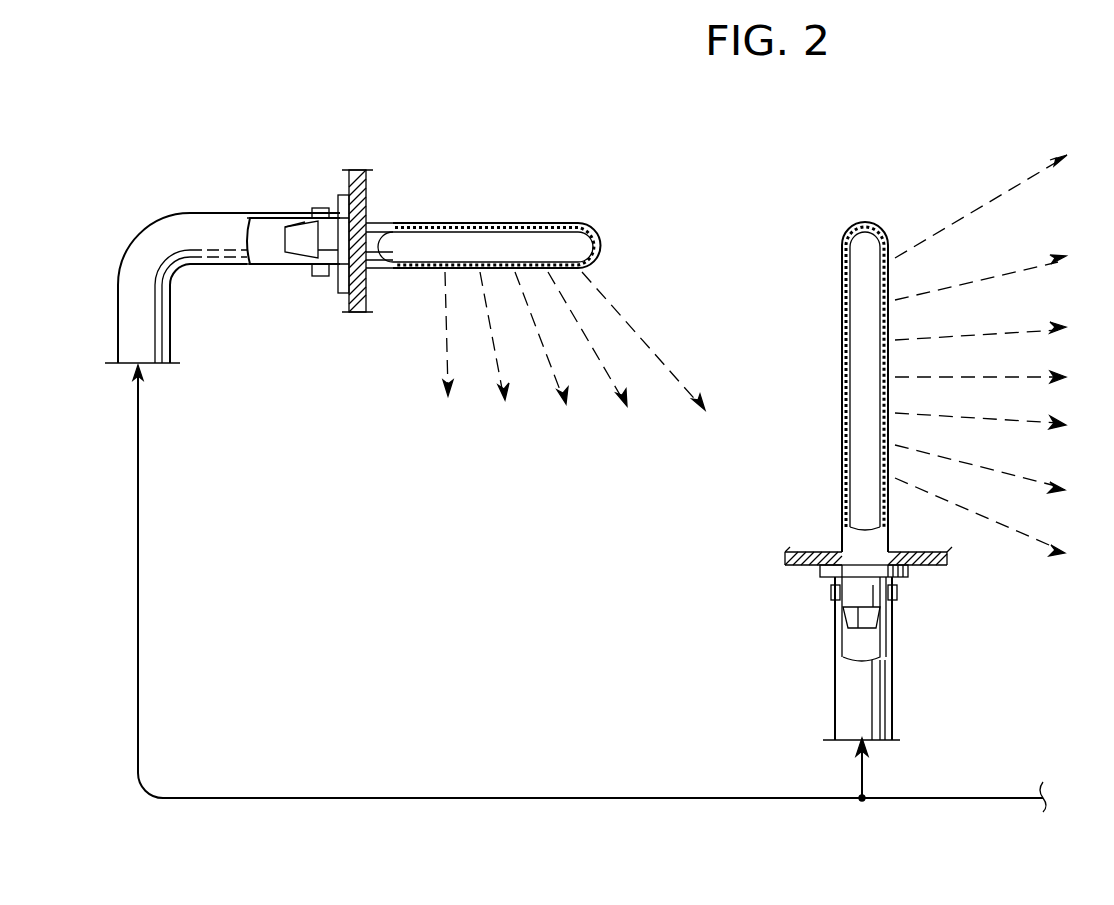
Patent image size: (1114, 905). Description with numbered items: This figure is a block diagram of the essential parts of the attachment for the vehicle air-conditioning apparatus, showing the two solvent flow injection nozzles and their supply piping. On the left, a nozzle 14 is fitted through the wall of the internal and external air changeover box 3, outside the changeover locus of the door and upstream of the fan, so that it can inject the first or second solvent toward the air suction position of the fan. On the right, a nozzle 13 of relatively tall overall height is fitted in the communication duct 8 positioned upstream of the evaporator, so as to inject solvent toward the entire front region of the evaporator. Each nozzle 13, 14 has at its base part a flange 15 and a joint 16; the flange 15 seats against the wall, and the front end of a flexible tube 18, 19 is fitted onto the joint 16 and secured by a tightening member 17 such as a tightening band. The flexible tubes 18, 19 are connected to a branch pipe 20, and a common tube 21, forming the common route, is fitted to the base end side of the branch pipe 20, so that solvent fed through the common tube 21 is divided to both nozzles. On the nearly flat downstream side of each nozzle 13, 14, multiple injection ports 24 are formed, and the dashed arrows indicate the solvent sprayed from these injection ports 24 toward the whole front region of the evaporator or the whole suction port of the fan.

The internal and external air changeover box 3 is at (367, 172).
The communication duct 8 is at (793, 552).
The nozzle 13 is at (842, 362).
The nozzle 14 is at (493, 224).
The flange 15 is at (340, 200).
The joint 16 is at (322, 237).
The tightening member 17 is at (318, 277).
The flexible tube 18 is at (893, 693).
The flexible tube 19 is at (118, 312).
The branch pipe 20 is at (862, 801).
The common tube 21 is at (965, 798).
The injection ports 24 is at (445, 270).